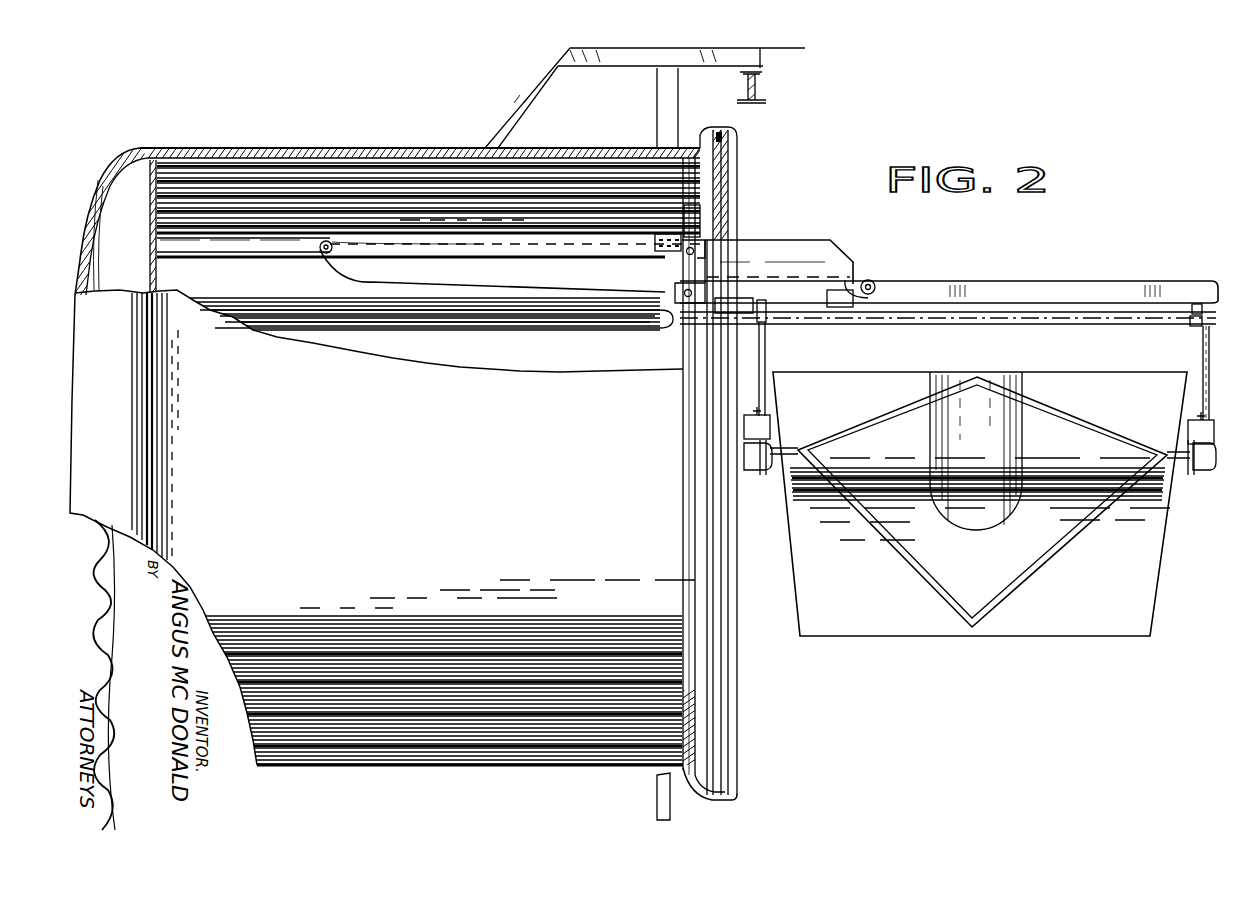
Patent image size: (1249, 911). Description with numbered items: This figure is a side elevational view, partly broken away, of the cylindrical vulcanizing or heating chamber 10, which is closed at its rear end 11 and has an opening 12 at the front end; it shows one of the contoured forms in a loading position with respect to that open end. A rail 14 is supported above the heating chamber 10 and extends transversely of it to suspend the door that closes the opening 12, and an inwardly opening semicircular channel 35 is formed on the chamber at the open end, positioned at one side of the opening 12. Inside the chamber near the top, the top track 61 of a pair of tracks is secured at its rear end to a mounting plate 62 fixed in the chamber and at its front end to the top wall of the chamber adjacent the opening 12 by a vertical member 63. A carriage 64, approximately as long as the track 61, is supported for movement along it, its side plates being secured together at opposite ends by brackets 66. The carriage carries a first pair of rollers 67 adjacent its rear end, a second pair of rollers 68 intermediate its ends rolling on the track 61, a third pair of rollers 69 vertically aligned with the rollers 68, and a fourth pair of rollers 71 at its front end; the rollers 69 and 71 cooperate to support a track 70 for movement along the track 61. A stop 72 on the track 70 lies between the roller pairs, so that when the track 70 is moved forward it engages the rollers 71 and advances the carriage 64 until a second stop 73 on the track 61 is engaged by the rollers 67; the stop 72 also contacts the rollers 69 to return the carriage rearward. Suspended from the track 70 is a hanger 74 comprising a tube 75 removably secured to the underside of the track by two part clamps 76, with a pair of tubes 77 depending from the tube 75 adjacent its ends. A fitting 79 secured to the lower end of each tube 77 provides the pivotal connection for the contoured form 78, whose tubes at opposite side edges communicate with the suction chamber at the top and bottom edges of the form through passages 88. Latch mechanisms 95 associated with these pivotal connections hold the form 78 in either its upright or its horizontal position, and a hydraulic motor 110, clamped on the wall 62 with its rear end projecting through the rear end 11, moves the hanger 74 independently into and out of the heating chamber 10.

The heating chamber 10 is at (316, 150).
The rear end 11 is at (103, 198).
The opening 12 is at (737, 183).
The rail 14 is at (760, 96).
The semicircular channel 35 is at (722, 160).
The top track 61 is at (172, 244).
The mounting plate 62 is at (150, 197).
The vertical member 63 is at (684, 212).
The carriage 64 is at (784, 242).
The brackets 66 is at (812, 258).
The rollers 67 is at (323, 254).
The second pair of rollers 68 is at (700, 236).
The third pair of rollers 69 is at (676, 290).
The track 70 is at (995, 285).
The fourth pair of rollers 71 is at (870, 281).
The stop 72 is at (838, 310).
The second stop 73 is at (657, 246).
The hanger 74 is at (1210, 385).
The tube 75 is at (1065, 318).
The two part clamps 76 is at (764, 322).
The tubes 77 is at (770, 352).
The form 78 is at (1140, 606).
The fitting 79 is at (752, 462).
The passages 88 is at (1002, 382).
The latch mechanisms 95 is at (772, 425).
The hydraulic motor 110 is at (540, 320).